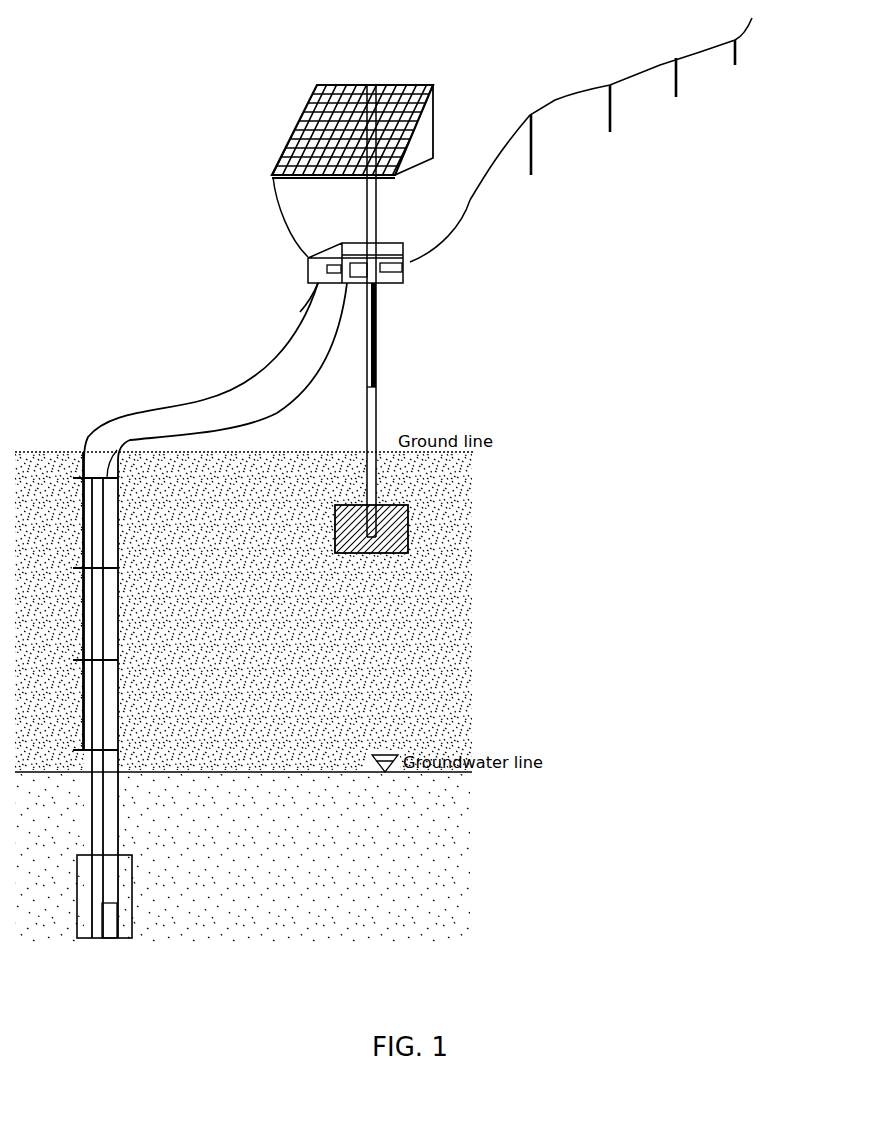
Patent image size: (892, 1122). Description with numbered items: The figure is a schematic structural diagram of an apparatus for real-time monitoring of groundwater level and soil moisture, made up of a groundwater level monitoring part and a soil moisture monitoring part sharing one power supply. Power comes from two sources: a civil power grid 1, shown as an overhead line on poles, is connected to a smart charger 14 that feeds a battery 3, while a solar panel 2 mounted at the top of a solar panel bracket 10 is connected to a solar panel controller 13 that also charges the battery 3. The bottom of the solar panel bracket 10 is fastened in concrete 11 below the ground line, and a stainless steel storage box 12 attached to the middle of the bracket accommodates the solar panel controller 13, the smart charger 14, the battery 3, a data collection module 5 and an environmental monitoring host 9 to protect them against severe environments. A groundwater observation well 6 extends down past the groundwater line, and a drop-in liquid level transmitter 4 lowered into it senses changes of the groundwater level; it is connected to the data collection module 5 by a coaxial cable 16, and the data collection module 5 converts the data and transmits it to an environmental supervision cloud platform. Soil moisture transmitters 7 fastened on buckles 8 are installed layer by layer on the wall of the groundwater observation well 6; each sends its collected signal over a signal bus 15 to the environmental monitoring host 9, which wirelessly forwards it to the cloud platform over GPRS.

The civil power grid 1 is at (555, 107).
The solar panel 2 is at (290, 130).
The battery 3 is at (382, 250).
The drop-in liquid level transmitter 4 is at (113, 903).
The data collection module 5 is at (375, 283).
The groundwater observation well 6 is at (120, 692).
The soil moisture transmitter 7 is at (73, 568).
The buckle 8 is at (118, 568).
The environmental monitoring host 9 is at (317, 295).
The solar panel bracket 10 is at (378, 420).
The concrete 11 is at (412, 548).
The stainless steel storage box 12 is at (340, 242).
The solar panel controller 13 is at (330, 270).
The smart charger 14 is at (398, 275).
The signal bus 15 is at (202, 395).
The coaxial cable 16 is at (177, 435).